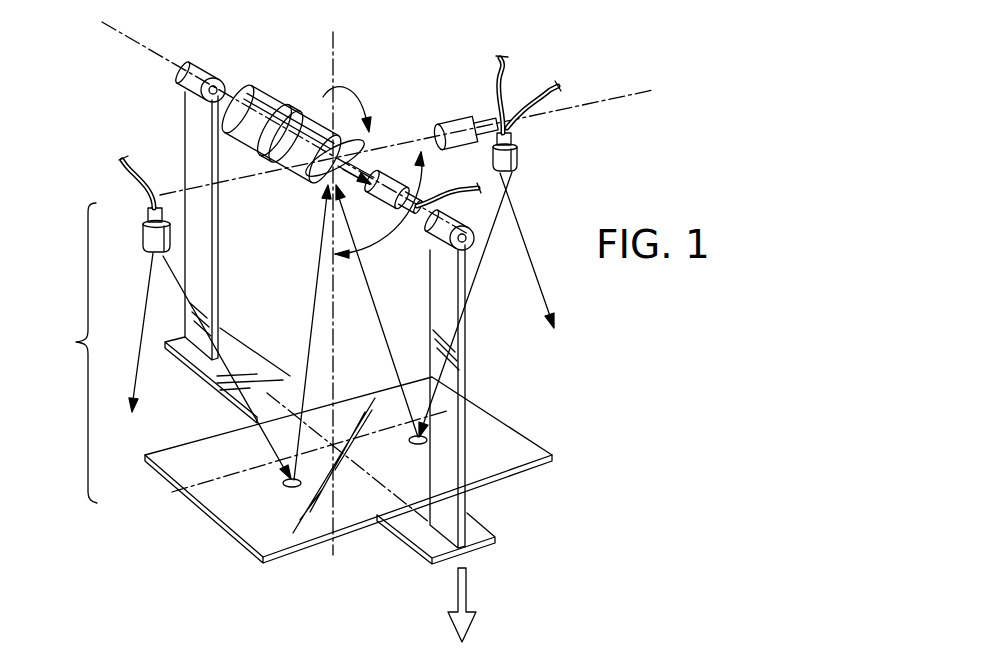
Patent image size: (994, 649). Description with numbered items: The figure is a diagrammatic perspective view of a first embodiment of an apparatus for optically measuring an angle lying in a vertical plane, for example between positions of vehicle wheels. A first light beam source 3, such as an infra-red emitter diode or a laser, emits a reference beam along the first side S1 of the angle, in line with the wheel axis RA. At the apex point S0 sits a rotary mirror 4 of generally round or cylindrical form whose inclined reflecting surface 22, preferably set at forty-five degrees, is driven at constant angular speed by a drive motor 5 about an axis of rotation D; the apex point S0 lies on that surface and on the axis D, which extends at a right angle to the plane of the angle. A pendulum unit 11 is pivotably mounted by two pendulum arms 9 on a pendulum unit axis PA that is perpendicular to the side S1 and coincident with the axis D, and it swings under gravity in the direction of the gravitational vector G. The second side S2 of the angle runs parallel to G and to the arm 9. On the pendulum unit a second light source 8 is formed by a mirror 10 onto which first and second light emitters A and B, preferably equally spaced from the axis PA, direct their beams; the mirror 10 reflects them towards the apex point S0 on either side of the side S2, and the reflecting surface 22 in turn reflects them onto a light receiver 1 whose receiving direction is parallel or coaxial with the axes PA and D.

The light receiver 1 is at (393, 180).
The first light beam source 3 is at (456, 120).
The rotary mirror 4 is at (341, 100).
The drive motor 5 is at (270, 96).
The second light source 8 is at (76, 353).
The pendulum arm 9 is at (193, 131).
The mirror 10 is at (513, 441).
The pendulum unit 11 is at (473, 528).
The reflecting surface 22 is at (318, 174).
The first light emitter A is at (145, 232).
The second light emitter B is at (520, 152).
The axis of rotation D is at (297, 126).
The gravitational vector G is at (472, 605).
The pendulum unit axis PA is at (112, 24).
The axis of the wheel RA is at (592, 103).
The apex point S0 is at (329, 192).
The first side of the angle S1 is at (413, 152).
The second side of the angle S2 is at (356, 293).